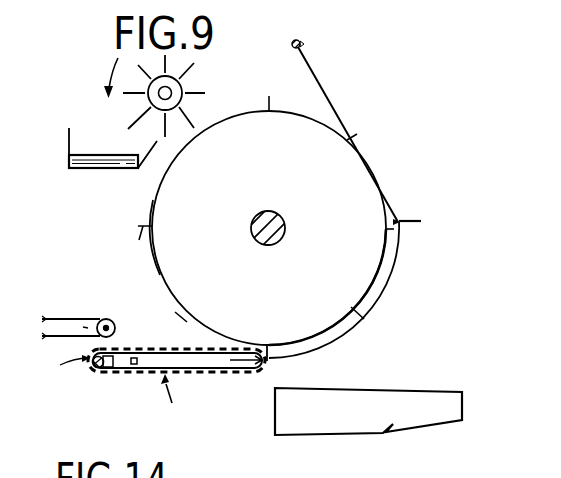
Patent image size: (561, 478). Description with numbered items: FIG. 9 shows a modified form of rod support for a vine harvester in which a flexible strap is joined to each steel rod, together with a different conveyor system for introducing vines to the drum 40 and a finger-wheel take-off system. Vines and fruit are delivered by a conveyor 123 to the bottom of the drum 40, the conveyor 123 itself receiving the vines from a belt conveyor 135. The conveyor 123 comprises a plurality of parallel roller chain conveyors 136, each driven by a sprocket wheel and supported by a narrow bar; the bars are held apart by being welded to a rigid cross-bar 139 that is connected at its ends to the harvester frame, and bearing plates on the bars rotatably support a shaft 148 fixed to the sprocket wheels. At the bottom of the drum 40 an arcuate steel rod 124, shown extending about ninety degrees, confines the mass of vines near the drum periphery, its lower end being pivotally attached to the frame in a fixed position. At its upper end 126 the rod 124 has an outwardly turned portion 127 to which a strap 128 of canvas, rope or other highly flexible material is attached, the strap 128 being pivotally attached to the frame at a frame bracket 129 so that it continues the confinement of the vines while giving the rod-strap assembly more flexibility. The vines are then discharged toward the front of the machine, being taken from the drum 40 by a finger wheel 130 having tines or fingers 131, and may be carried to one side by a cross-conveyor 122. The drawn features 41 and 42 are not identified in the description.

The drum 40 is at (165, 190).
The drum surface 41 is at (152, 262).
The drum gripper elements 42 is at (138, 228).
The cross-conveyor 122 is at (80, 172).
The conveyor 123 is at (177, 385).
The arcuate steel rod 124 is at (334, 342).
The upper end 126 is at (402, 226).
The outwardly turned portion 127 is at (419, 218).
The strap 128 is at (337, 104).
The frame bracket 129 is at (301, 38).
The finger wheel 130 is at (182, 90).
The tines or fingers 131 is at (139, 116).
The belt conveyor 135 is at (82, 318).
The roller chain conveyors 136 is at (212, 373).
The rigid cross-bar 139 is at (130, 373).
The shaft 148 is at (67, 368).